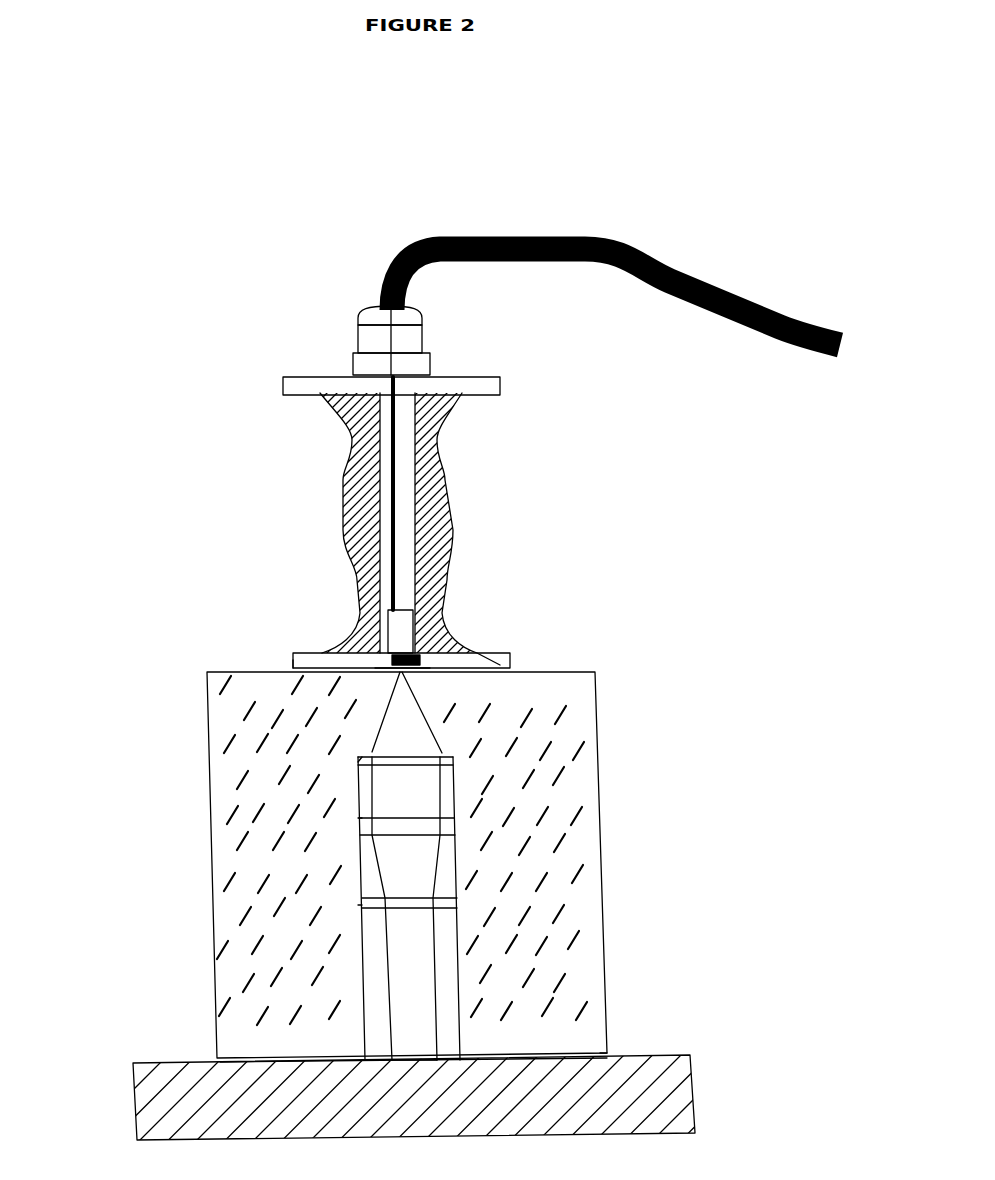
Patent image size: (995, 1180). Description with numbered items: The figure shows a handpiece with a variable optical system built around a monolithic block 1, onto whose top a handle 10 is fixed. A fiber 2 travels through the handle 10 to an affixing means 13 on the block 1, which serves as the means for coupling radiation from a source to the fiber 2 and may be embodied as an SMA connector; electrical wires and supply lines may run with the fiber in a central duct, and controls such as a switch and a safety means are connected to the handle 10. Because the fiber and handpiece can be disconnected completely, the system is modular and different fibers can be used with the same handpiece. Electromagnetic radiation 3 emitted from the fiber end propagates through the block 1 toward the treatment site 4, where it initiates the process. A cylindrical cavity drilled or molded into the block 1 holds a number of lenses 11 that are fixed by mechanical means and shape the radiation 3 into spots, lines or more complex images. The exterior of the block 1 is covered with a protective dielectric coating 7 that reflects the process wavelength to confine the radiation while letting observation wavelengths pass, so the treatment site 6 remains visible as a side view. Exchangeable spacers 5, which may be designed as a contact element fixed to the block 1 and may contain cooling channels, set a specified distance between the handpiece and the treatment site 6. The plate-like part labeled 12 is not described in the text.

The monolithic block 1 is at (580, 719).
The fiber 2 is at (492, 236).
The electromagnetic radiation 3 is at (425, 720).
The treatment site 4 is at (430, 1055).
The exchangeable spacer (contact element) 5 is at (610, 1053).
The treatment site 6 is at (683, 1097).
The protective dielectric coating 7 is at (258, 673).
The handle 10 is at (441, 466).
The lenses 11 is at (360, 755).
The bottom plate 12 is at (540, 667).
The affixing means 13 is at (413, 339).